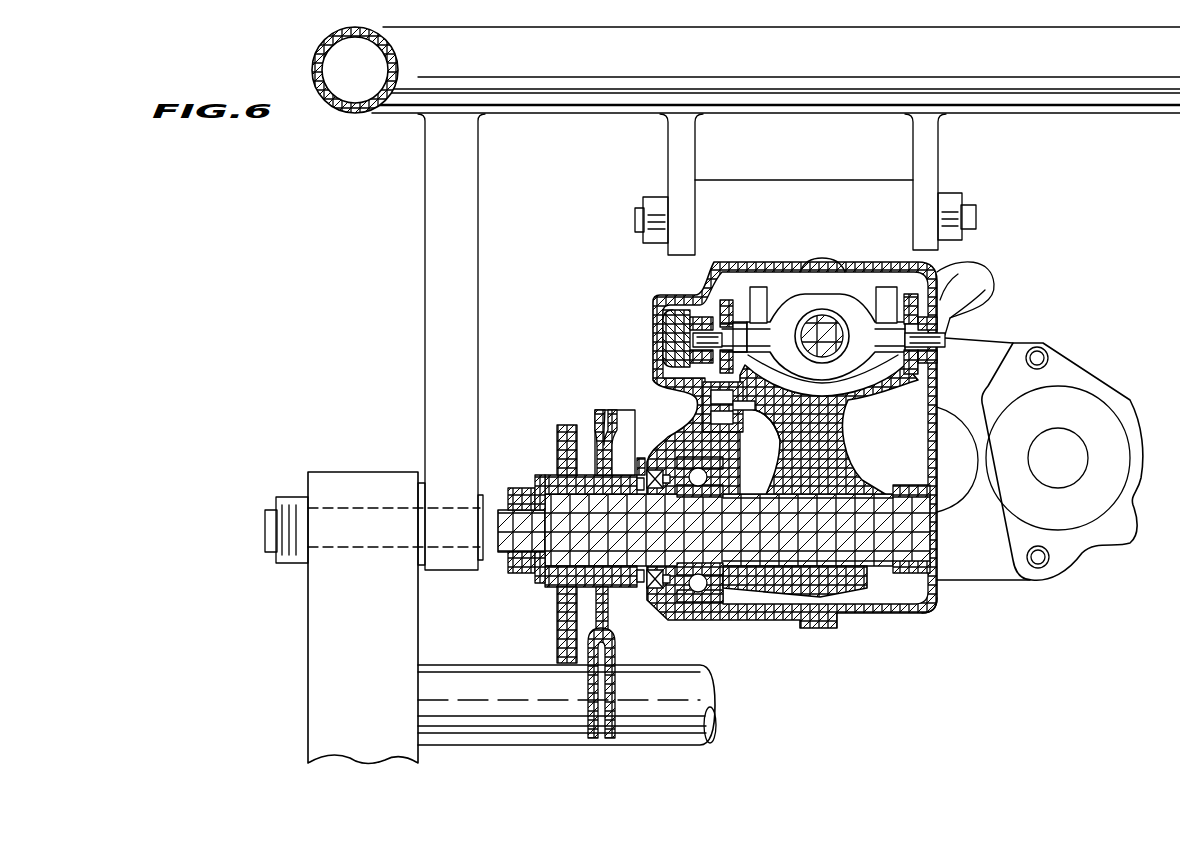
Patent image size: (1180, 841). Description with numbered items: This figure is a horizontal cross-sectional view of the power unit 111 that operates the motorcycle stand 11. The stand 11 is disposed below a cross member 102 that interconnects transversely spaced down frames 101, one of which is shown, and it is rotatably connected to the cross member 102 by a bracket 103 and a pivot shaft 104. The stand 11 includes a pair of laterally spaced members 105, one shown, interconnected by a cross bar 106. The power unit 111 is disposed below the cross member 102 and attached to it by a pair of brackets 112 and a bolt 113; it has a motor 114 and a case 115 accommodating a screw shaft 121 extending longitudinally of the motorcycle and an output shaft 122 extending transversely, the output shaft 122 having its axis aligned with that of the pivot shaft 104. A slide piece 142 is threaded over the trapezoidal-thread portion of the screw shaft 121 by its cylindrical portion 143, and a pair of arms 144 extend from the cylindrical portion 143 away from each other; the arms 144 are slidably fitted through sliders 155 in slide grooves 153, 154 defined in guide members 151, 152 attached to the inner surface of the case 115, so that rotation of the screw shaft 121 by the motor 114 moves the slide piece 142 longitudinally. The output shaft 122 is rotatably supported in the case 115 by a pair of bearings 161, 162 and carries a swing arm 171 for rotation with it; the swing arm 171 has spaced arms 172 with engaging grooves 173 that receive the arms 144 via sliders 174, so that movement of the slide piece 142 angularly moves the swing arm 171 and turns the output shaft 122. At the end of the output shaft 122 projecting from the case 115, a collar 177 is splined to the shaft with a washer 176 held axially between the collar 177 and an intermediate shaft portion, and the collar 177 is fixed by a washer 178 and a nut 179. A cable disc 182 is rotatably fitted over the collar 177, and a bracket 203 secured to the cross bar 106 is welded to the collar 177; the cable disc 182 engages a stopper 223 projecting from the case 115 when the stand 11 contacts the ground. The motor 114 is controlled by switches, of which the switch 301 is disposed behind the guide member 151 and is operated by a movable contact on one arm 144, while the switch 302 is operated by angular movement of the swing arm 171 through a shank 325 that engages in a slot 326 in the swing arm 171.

The stand 11 is at (312, 745).
The down frame 101 is at (361, 114).
The cross member 102 is at (1052, 100).
The bracket 103 is at (425, 290).
The pivot shaft 104 is at (354, 505).
The laterally spaced member 105 is at (312, 628).
The cross bar 106 is at (450, 672).
The power unit 111 is at (1008, 256).
The bracket 112 is at (668, 140).
The bolt 113 is at (643, 221).
The motor 114 is at (1102, 425).
The case 115 is at (937, 405).
The screw shaft 121 is at (843, 305).
The output shaft 122 is at (849, 547).
The slide piece 142 is at (817, 290).
The cylindrical portion 143 is at (822, 258).
The arm 144 is at (757, 300).
The guide member 151 is at (738, 300).
The guide member 152 is at (942, 274).
The slide groove 153 is at (746, 300).
The slide groove 154 is at (962, 300).
The slider 155 is at (785, 370).
The bearing 161 is at (697, 590).
The bearing 162 is at (936, 590).
The swing arm 171 is at (900, 464).
The spaced arm 172 is at (772, 405).
The engaging groove 173 is at (775, 300).
The slider 174 is at (766, 305).
The washer 176 is at (634, 462).
The collar 177 is at (560, 450).
The washer 178 is at (546, 587).
The nut 179 is at (518, 563).
The cable disc 182 is at (622, 708).
The bracket 203 is at (563, 620).
The stopper 223 is at (603, 416).
The switch 301 is at (668, 322).
The switch 302 is at (705, 398).
The shank 325 is at (706, 577).
The slot 326 is at (706, 485).